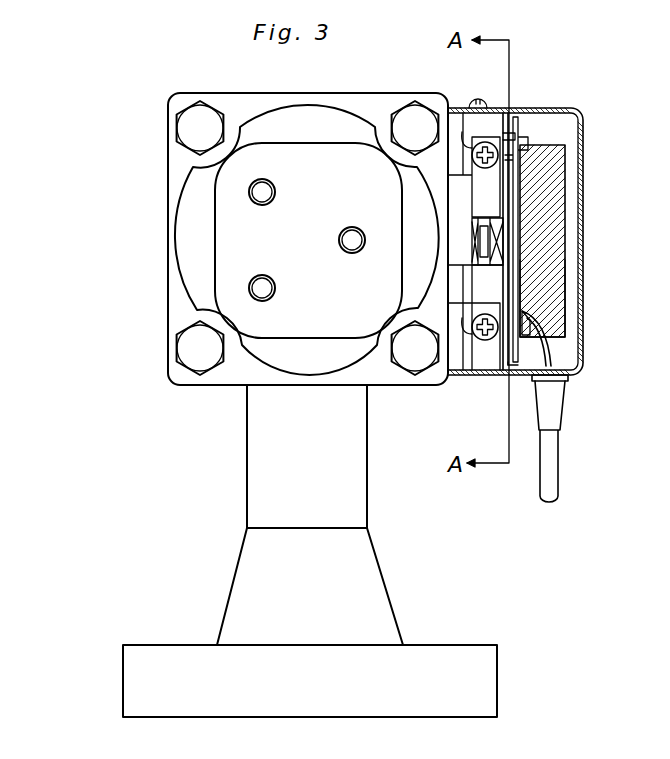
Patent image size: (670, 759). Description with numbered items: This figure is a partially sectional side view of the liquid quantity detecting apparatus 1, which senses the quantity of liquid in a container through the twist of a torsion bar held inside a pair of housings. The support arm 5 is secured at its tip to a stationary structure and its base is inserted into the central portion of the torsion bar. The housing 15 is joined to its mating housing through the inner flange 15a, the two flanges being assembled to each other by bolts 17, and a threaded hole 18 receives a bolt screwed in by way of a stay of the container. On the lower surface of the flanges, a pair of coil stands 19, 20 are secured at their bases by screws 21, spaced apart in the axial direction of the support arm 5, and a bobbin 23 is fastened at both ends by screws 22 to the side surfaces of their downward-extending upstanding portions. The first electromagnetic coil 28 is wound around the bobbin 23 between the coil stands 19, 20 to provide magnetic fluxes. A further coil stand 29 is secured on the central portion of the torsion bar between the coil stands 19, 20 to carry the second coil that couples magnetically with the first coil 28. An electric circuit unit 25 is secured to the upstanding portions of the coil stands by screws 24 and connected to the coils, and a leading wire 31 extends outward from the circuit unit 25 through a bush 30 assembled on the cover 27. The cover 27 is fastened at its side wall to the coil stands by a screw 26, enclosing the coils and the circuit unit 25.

The liquid quantity detecting apparatus 1 is at (165, 76).
The support arm 5 is at (243, 572).
The housing 15 is at (307, 125).
The inner flange 15a is at (175, 168).
The bolts 17 is at (203, 122).
The threaded hole 18 is at (262, 190).
The coil stand 19 is at (470, 120).
The coil stand 20 is at (494, 378).
The screws 21 is at (466, 136).
The screws 22 is at (480, 165).
The bobbin 23 is at (530, 190).
The screws 24 is at (520, 140).
The electric circuit unit 25 is at (552, 292).
The screw 26 is at (484, 105).
The cover 27 is at (582, 128).
The first electromagnetic coil 28 is at (478, 240).
The coil stand 29 is at (462, 258).
The bush 30 is at (555, 410).
The leading wire 31 is at (552, 358).